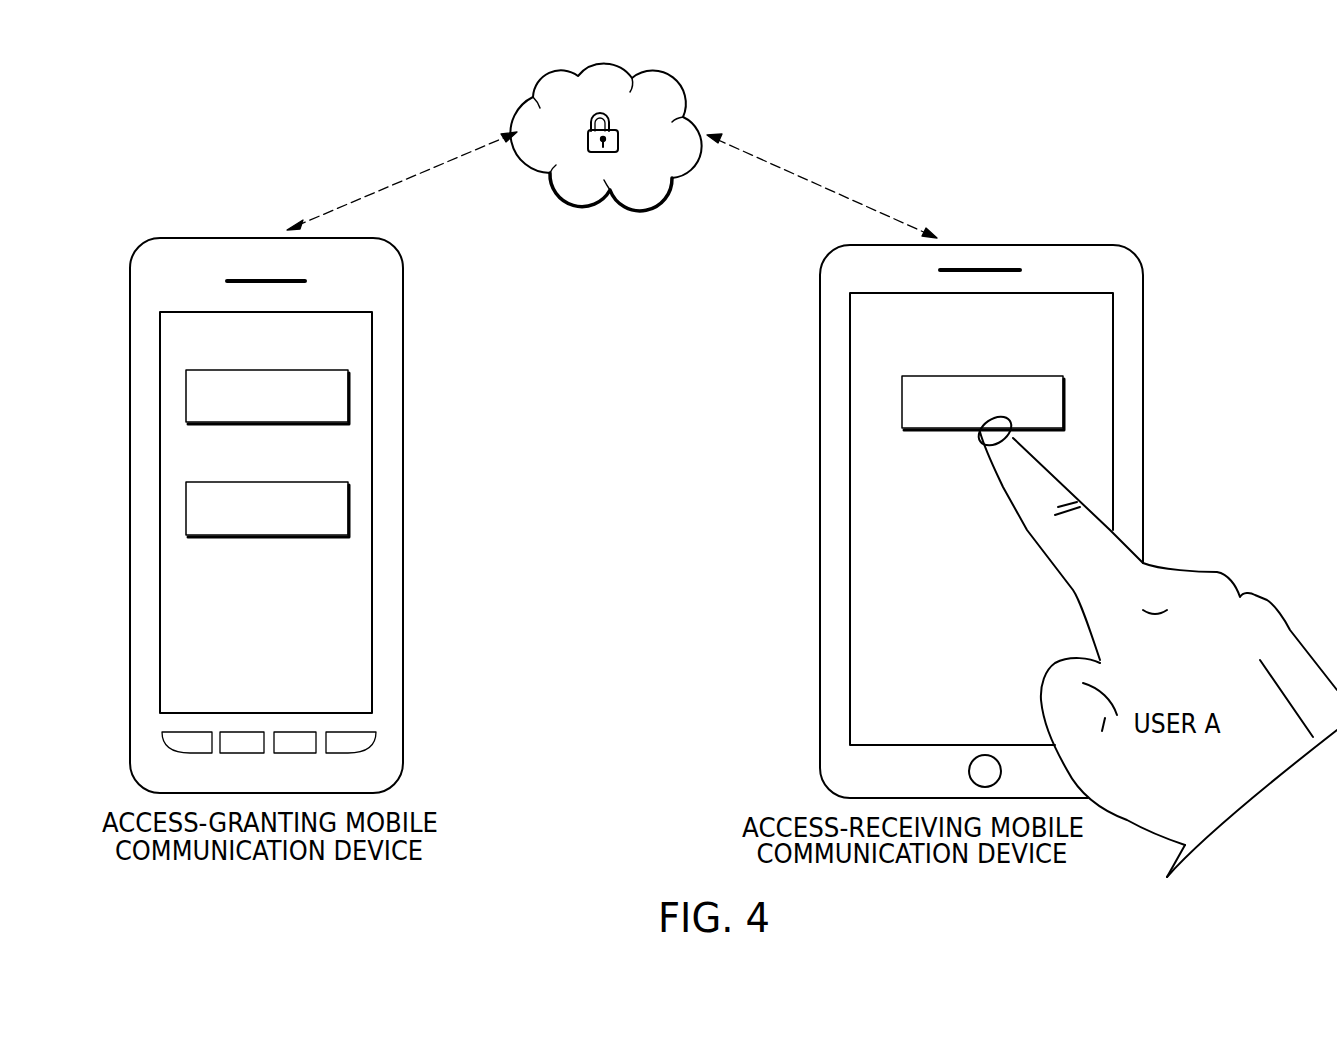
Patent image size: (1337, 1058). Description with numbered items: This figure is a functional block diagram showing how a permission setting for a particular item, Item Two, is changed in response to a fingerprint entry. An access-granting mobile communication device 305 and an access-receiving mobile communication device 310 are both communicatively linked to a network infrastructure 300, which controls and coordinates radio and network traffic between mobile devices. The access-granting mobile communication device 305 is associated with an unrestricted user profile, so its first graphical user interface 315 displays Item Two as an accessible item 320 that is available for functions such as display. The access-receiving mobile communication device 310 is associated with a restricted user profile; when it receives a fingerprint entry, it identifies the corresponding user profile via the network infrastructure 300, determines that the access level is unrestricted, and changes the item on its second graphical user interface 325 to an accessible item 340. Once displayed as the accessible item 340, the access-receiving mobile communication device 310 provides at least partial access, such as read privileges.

The network infrastructure 300 is at (528, 100).
The access-granting mobile communication device 305 is at (130, 338).
The access-receiving mobile communication device 310 is at (820, 320).
The first graphical user interface 315 is at (174, 643).
The accessible item 320 is at (186, 505).
The second graphical user interface 325 is at (866, 648).
The accessible item 340 is at (902, 402).